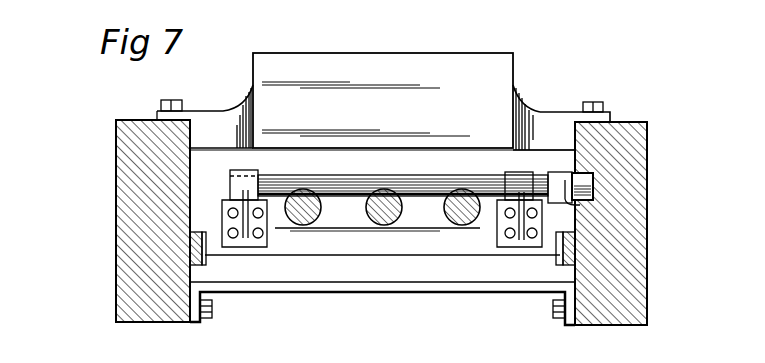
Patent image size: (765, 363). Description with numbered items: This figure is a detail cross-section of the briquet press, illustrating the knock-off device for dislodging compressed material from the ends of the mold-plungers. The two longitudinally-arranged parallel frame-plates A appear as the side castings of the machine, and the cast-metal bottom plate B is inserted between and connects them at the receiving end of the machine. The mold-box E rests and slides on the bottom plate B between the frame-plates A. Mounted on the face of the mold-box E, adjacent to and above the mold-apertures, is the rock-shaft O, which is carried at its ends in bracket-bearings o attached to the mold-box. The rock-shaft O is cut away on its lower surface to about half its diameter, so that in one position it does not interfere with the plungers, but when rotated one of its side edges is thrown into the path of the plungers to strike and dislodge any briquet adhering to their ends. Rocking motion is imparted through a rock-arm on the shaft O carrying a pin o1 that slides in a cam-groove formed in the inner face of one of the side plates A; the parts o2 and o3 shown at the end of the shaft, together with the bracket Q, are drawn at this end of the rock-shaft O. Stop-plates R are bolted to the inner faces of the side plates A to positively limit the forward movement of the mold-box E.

The frame-plates A is at (116, 263).
The bottom plate B is at (447, 290).
The mold-box E is at (372, 252).
The rock-shaft O is at (348, 178).
The bracket-bearings o is at (230, 180).
The right bearing bracket Q is at (519, 209).
The stop-plates R is at (208, 264).
The pin o1 is at (578, 205).
The collar block o2 is at (593, 186).
The adjusting nut o3 is at (584, 177).